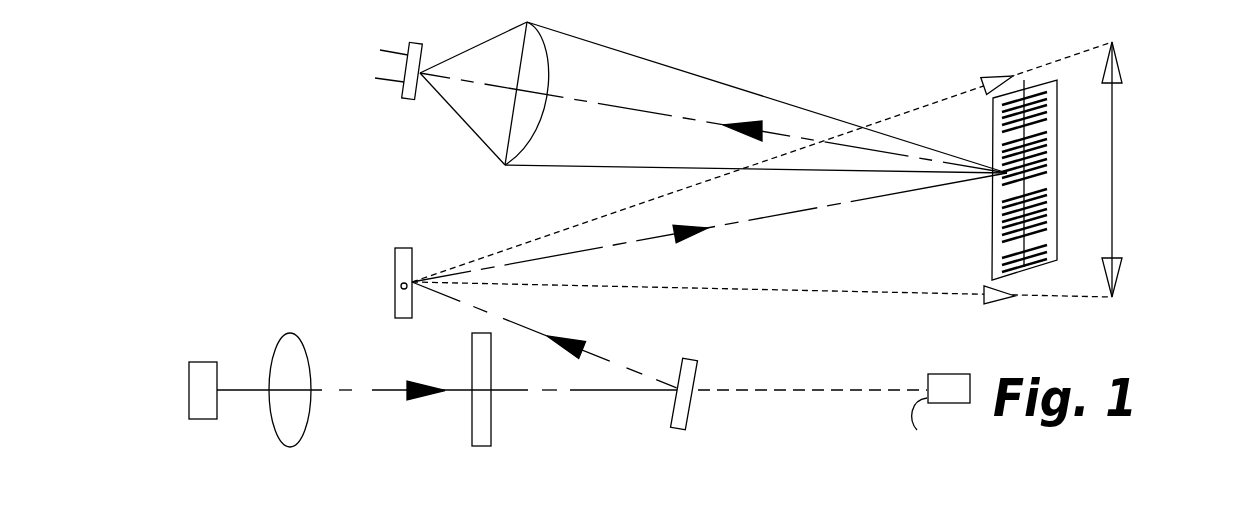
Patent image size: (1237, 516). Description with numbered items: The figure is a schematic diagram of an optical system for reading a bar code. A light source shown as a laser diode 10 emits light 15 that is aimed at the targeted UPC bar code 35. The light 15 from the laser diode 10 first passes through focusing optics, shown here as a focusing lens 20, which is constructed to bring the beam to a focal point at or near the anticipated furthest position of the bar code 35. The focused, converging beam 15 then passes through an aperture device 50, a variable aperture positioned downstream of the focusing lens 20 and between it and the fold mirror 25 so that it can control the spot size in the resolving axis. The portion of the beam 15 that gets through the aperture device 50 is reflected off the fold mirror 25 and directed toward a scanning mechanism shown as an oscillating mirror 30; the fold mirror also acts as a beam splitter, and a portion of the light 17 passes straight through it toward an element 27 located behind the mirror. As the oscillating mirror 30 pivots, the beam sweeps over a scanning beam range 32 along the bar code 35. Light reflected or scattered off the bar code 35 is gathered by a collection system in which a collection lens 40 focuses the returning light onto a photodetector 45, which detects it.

The laser diode 10 is at (202, 408).
The light beam 15 is at (383, 383).
The transmitted beam 17 is at (792, 388).
The focusing lens 20 is at (290, 445).
The fold mirror 25 is at (672, 431).
The beam stop / detector 27 is at (941, 413).
The oscillating mirror 30 is at (402, 305).
The scanning beam range 32 is at (819, 173).
The bar code 35 is at (1003, 255).
The collection lens 40 is at (505, 166).
The photodetector 45 is at (402, 102).
The aperture device 50 is at (480, 448).